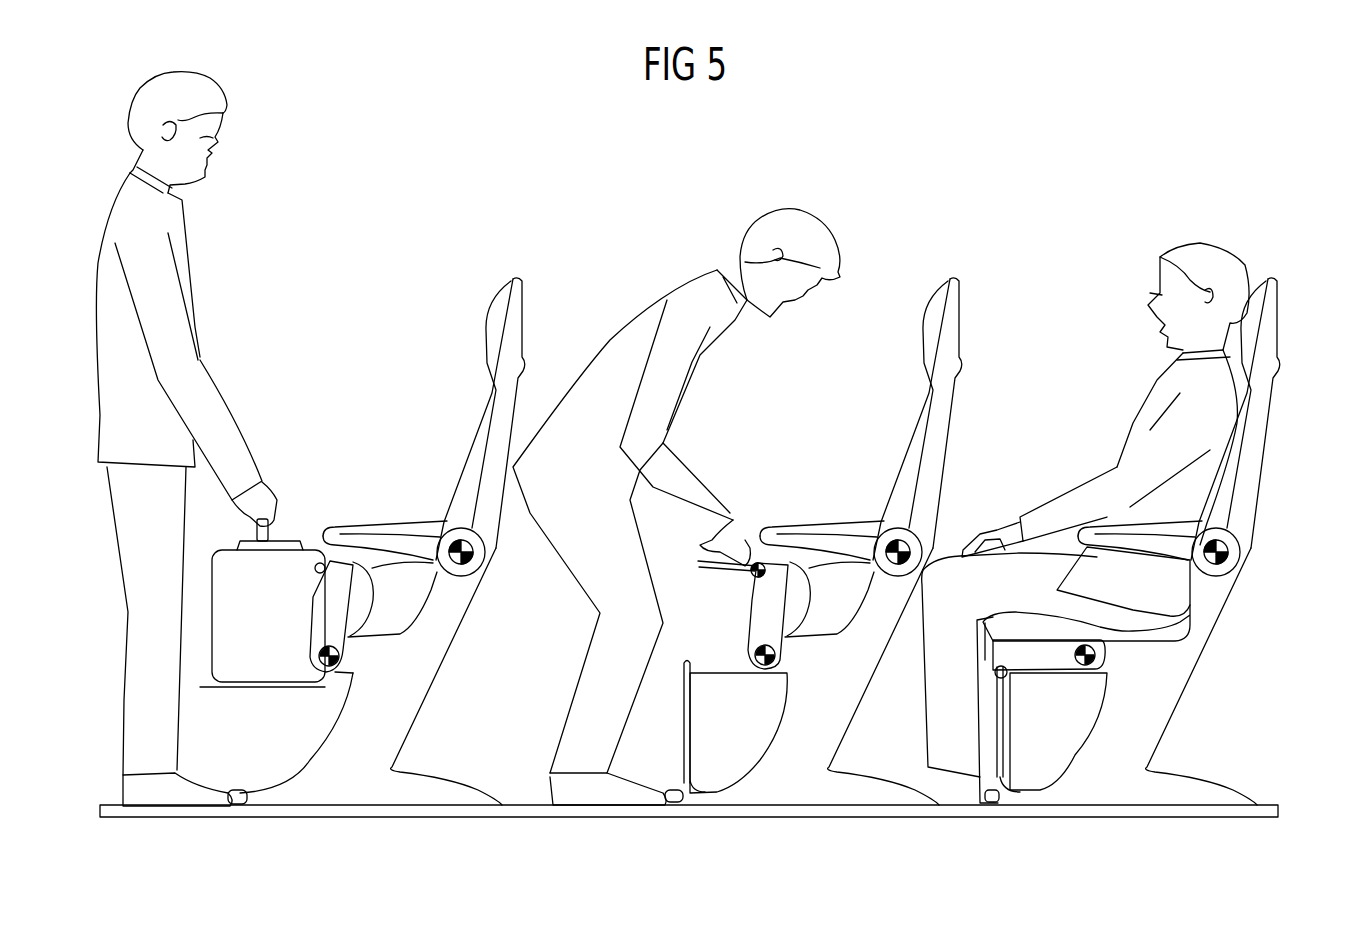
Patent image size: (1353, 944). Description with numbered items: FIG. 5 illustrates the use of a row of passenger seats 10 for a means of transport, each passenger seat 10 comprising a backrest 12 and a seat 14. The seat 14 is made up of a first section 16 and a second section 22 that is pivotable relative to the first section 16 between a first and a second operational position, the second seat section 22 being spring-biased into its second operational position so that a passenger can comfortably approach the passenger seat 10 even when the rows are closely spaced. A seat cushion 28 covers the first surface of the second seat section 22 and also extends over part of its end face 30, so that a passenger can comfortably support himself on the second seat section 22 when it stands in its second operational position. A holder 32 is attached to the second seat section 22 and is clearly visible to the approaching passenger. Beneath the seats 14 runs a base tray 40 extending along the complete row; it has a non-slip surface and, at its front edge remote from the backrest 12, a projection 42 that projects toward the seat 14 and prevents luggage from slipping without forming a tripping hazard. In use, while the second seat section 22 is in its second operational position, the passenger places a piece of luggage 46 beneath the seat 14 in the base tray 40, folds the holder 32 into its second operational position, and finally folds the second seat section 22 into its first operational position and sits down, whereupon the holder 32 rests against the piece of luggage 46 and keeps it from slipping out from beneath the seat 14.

The passenger seat 10 is at (785, 496).
The backrest 12 is at (517, 303).
The seat 14 is at (353, 657).
The first section 16 is at (383, 620).
The second section 22 is at (310, 641).
The seat cushion 28 is at (380, 520).
The end face 30 is at (343, 557).
The holder 32 is at (313, 598).
The base tray 40 is at (320, 800).
The projection 42 is at (233, 790).
The piece of luggage 46 is at (288, 540).